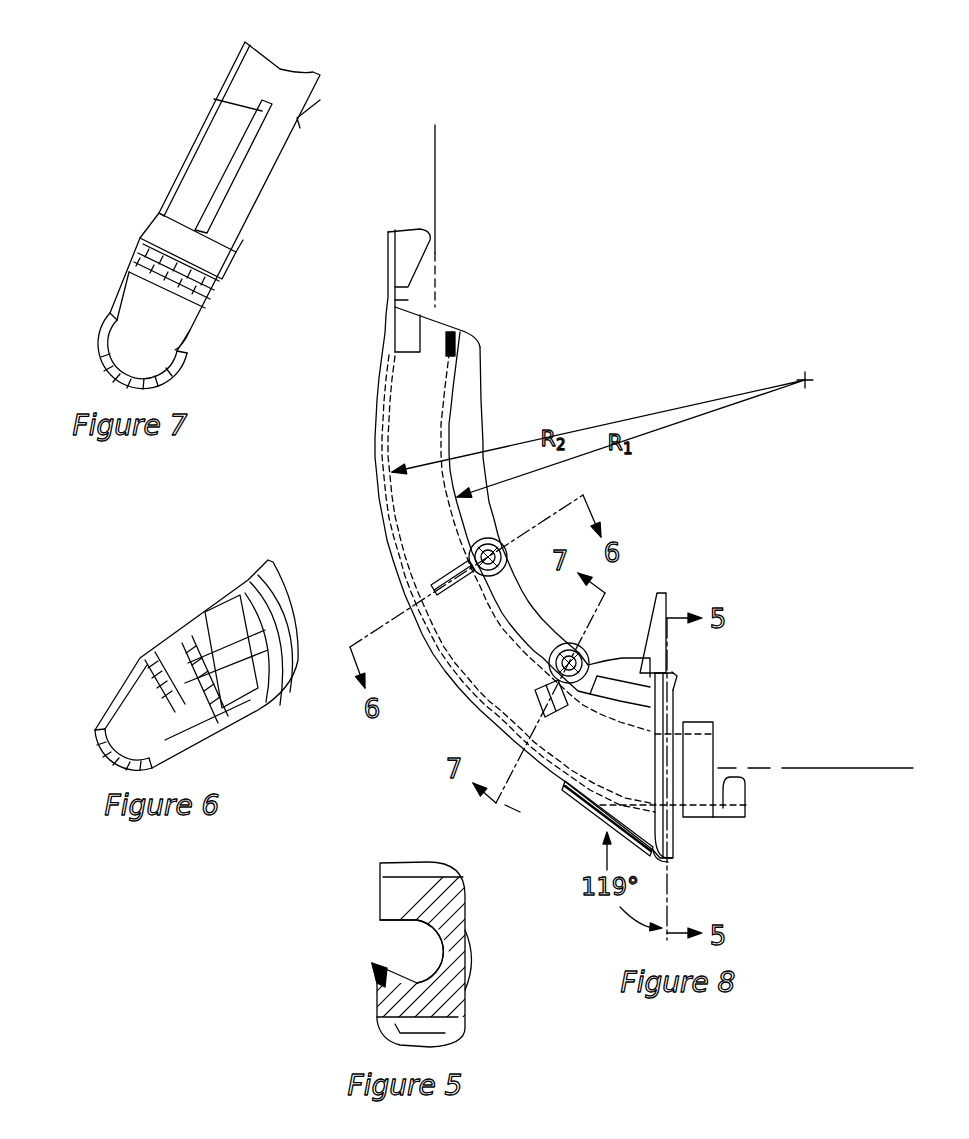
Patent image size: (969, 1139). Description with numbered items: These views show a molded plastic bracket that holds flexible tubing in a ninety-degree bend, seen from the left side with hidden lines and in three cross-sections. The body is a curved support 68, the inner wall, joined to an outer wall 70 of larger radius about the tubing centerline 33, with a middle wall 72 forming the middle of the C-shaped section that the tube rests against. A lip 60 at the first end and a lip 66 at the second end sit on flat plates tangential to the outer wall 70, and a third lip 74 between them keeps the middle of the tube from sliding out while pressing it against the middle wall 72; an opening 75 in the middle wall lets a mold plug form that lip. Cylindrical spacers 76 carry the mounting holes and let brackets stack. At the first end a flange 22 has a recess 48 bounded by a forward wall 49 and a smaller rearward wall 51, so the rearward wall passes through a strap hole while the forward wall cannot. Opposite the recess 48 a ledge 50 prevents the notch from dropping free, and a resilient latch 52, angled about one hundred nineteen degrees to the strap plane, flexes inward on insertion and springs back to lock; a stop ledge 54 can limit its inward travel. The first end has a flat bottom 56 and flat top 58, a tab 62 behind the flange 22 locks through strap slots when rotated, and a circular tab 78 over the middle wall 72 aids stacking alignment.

In FIG. 7, the curved support 68 is at (237, 190).
In FIG. 6, the curved support 68 is at (140, 664).
In FIG. 8, the curved support 68 is at (453, 398).
In FIG. 7, the outer wall 70 is at (110, 368).
In FIG. 6, the outer wall 70 is at (95, 737).
In FIG. 8, the outer wall 70 is at (375, 450).
In FIG. 7, the middle wall 72 is at (107, 324).
In FIG. 6, the middle wall 72 is at (150, 768).
In FIG. 7, the third lip 74 is at (174, 345).
In FIG. 8, the third lip 74 is at (537, 700).
In FIG. 8, the spacer 76 is at (494, 539).
In FIG. 8, the lip 66 is at (427, 237).
In FIG. 8, the centerline 33 is at (436, 160).
In FIG. 8, the tab 62 is at (660, 590).
In FIG. 8, the rearward wall 51 is at (668, 612).
In FIG. 5, the recess 48 is at (410, 870).
In FIG. 8, the recess 48 is at (678, 672).
In FIG. 8, the flange 22 is at (709, 674).
In FIG. 8, the opening 75 is at (529, 817).
In FIG. 8, the latch 52 is at (588, 820).
In FIG. 5, the ledge 50 is at (437, 1040).
In FIG. 8, the ledge 50 is at (670, 860).
In FIG. 5, the lip 60 is at (367, 970).
In FIG. 8, the lip 60 is at (746, 805).
In FIG. 5, the forward wall 49 is at (447, 863).
In FIG. 5, the flat top 58 is at (390, 923).
In FIG. 5, the flat bottom 56 is at (380, 962).
In FIG. 5, the stop ledge 54 is at (387, 1023).
In FIG. 5, the circular tab 78 is at (477, 960).